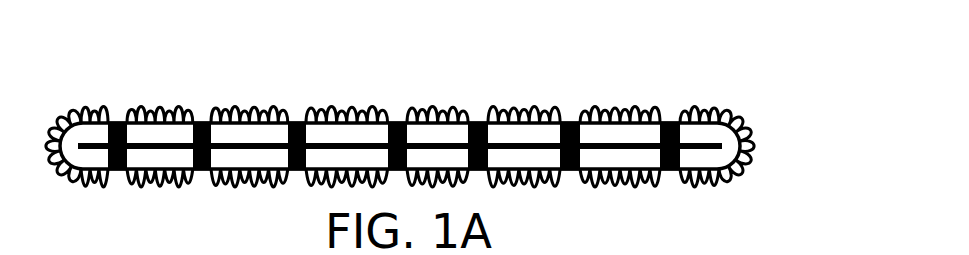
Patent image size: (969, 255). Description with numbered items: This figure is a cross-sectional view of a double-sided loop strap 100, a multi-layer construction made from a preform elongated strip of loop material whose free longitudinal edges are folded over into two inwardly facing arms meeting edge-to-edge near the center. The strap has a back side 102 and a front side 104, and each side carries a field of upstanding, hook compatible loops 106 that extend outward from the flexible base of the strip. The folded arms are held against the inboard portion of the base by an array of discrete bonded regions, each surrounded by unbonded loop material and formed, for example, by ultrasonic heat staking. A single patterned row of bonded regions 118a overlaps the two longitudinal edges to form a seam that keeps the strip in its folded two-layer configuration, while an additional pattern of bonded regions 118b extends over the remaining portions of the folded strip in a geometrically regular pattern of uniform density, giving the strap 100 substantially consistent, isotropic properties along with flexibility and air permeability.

The double-sided loop strap 100 is at (708, 87).
The back side 102 is at (345, 85).
The front side 104 is at (600, 205).
The hook compatible loops 106 is at (488, 108).
The bonded regions (seam row) 118a is at (393, 120).
The bonded regions (additional pattern) 118b is at (198, 112).